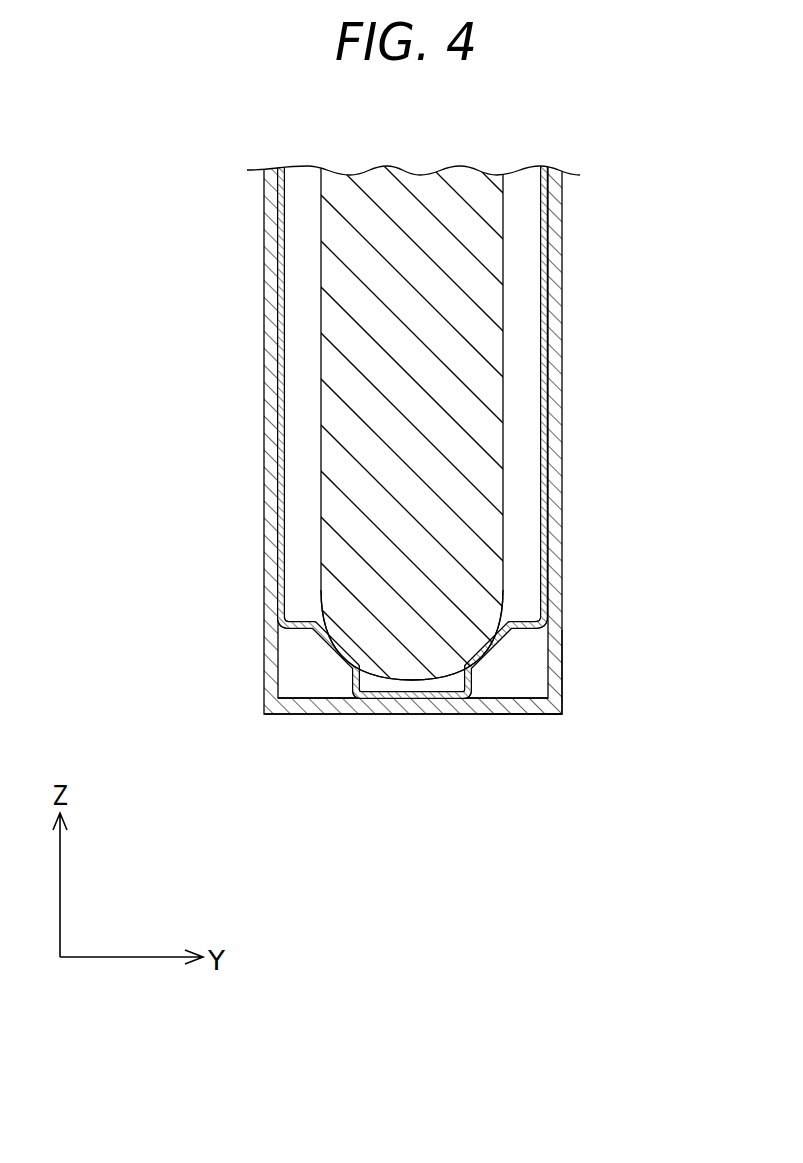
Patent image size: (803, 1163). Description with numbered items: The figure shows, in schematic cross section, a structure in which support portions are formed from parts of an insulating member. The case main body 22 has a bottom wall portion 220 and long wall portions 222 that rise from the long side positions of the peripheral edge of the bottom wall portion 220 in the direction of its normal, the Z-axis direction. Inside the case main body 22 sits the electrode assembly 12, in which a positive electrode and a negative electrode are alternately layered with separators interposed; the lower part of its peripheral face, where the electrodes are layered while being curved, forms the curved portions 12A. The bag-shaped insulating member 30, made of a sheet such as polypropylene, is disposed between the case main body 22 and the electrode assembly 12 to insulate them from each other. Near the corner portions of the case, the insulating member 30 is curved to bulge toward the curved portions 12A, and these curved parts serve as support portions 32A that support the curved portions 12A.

The electrode assembly 12 is at (503, 268).
The curved portions 12A is at (410, 682).
The case main body 22 is at (563, 433).
The bottom wall portion 220 is at (512, 715).
The long wall portions 222 is at (563, 648).
The insulating member 30 is at (282, 252).
The support portions 32A is at (307, 615).